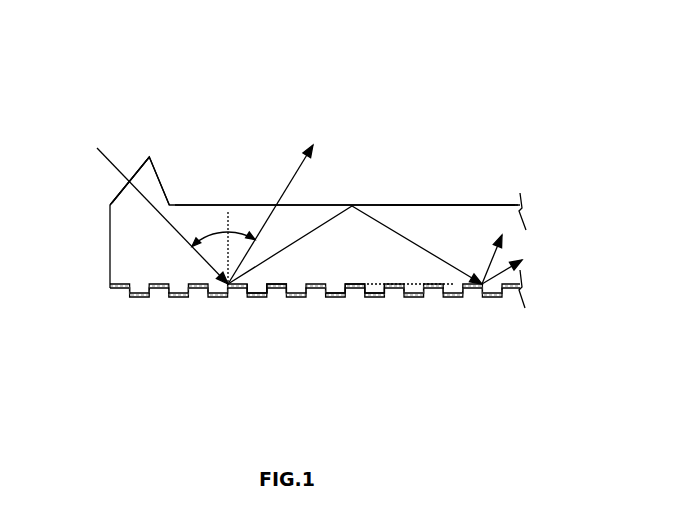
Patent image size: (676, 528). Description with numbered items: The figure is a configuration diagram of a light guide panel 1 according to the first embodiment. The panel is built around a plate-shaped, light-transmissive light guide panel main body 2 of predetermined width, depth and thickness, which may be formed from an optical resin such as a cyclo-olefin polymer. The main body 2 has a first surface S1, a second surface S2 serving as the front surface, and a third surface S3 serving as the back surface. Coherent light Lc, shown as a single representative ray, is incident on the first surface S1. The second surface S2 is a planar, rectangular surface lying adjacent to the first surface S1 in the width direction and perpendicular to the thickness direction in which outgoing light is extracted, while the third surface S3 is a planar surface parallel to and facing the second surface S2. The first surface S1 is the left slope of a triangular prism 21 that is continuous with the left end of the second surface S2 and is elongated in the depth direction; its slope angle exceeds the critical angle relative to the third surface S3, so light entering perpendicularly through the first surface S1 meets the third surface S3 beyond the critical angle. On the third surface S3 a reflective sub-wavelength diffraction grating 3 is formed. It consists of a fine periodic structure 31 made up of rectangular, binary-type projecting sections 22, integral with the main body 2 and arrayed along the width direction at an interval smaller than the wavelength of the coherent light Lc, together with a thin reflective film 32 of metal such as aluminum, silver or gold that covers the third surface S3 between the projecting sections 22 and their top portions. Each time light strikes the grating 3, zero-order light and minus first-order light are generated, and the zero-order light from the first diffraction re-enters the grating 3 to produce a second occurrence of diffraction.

The light guide panel 1 is at (101, 76).
The light guide panel main body 2 is at (371, 205).
The reflective sub-wavelength diffraction grating 3 is at (238, 328).
The prism 21 is at (158, 178).
The projecting sections 22 is at (335, 291).
The fine periodic structure 31 is at (257, 289).
The reflective film 32 is at (277, 290).
The first surface S1 is at (130, 177).
The second surface S2 is at (453, 205).
The third surface S3 is at (418, 295).
The coherent light Lc is at (108, 163).